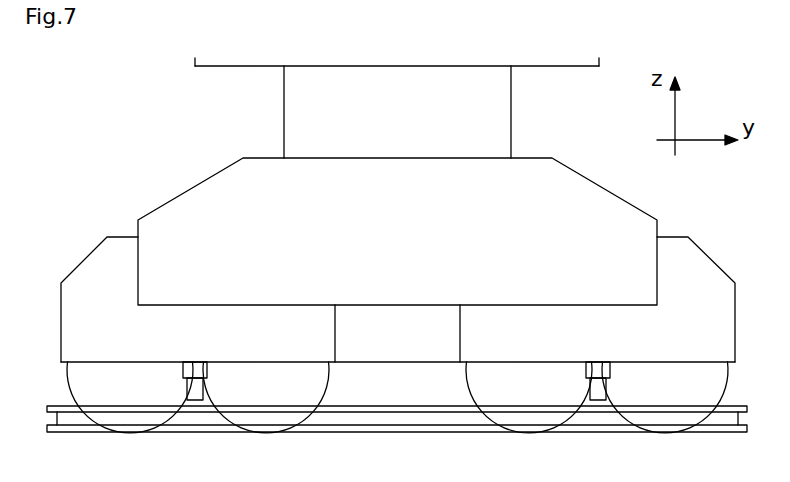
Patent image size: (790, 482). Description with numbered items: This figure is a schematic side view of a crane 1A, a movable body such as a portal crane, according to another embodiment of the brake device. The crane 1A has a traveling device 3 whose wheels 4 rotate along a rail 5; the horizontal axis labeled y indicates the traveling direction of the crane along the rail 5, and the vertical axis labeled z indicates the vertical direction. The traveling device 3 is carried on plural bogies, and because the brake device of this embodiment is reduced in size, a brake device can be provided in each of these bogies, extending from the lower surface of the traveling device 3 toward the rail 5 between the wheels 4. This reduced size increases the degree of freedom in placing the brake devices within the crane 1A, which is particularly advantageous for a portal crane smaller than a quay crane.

The crane 1A is at (97, 95).
The traveling device 3 is at (153, 183).
The wheels 4 is at (93, 383).
The rail 5 is at (427, 407).